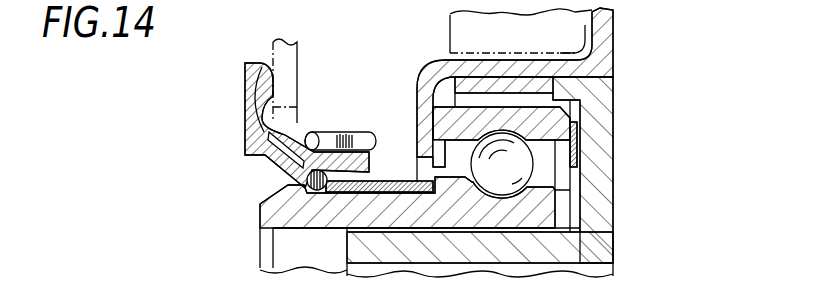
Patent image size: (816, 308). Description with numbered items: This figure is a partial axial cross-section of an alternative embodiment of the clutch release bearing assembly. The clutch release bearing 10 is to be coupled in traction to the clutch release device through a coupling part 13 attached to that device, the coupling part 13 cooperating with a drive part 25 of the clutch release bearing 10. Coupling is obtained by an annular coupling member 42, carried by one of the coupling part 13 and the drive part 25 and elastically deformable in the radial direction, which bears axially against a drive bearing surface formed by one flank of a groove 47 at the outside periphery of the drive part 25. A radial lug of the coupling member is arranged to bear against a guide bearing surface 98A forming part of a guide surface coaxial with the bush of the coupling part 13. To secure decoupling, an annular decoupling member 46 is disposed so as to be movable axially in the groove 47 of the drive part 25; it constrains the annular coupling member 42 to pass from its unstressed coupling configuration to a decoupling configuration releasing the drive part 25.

The clutch release bearing 10 is at (414, 67).
The coupling part 13 is at (240, 123).
The drive part 25 is at (259, 231).
The annular coupling member 42 is at (312, 203).
The annular decoupling member 46 is at (402, 164).
The groove 47 is at (388, 186).
The guide bearing surface 98A is at (293, 158).